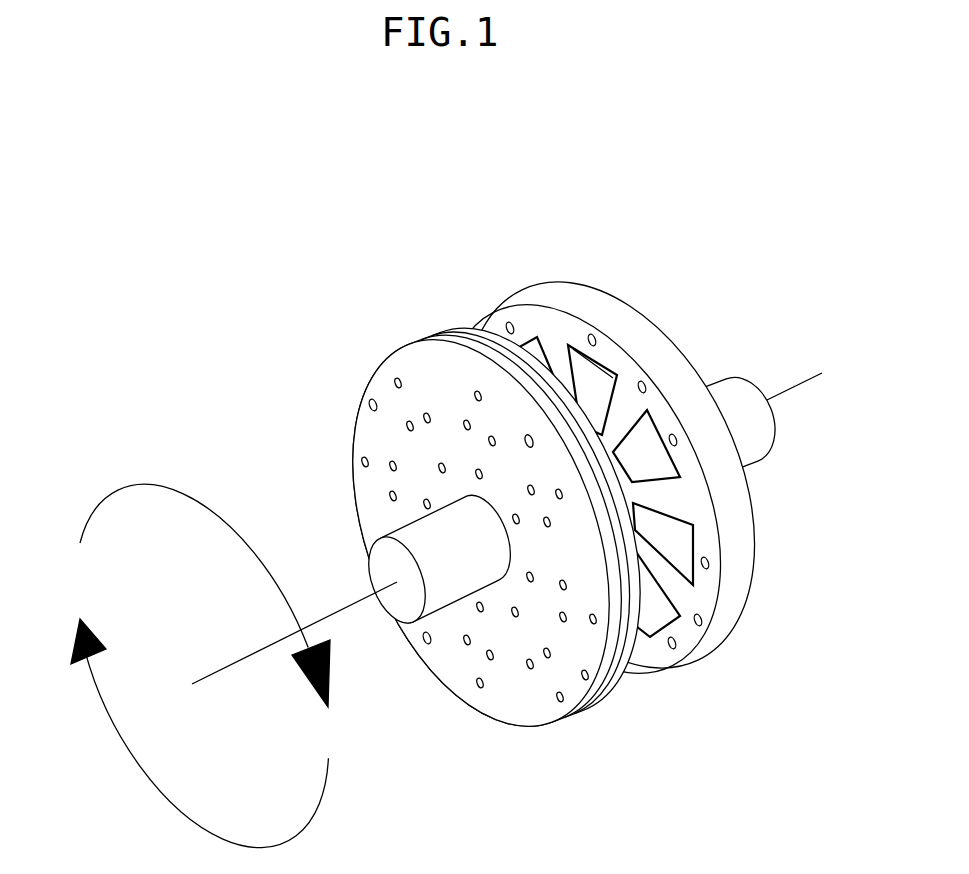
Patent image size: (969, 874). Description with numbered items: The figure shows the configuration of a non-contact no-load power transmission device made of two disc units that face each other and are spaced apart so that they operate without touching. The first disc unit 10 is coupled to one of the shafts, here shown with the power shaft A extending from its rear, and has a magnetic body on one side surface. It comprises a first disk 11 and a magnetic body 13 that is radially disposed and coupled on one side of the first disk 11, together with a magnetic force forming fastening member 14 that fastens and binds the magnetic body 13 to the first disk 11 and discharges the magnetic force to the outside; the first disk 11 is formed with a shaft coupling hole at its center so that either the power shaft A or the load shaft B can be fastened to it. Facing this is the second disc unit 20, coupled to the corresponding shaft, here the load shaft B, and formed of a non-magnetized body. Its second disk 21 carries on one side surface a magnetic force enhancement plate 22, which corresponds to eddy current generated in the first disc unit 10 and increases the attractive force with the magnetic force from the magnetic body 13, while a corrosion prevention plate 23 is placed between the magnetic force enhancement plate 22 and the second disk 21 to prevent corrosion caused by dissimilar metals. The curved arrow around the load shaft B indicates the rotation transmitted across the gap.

The first disc unit 10 is at (607, 418).
The first disk 11 is at (666, 357).
The magnetic body 13 is at (510, 304).
The magnetic force forming fastening member 14 is at (600, 376).
The second disc unit 20 is at (435, 508).
The second disk 21 is at (421, 352).
The magnetic force enhancement plate 22 is at (463, 341).
The corrosion prevention plate 23 is at (435, 342).
The power shaft A is at (742, 393).
The load shaft B is at (380, 558).